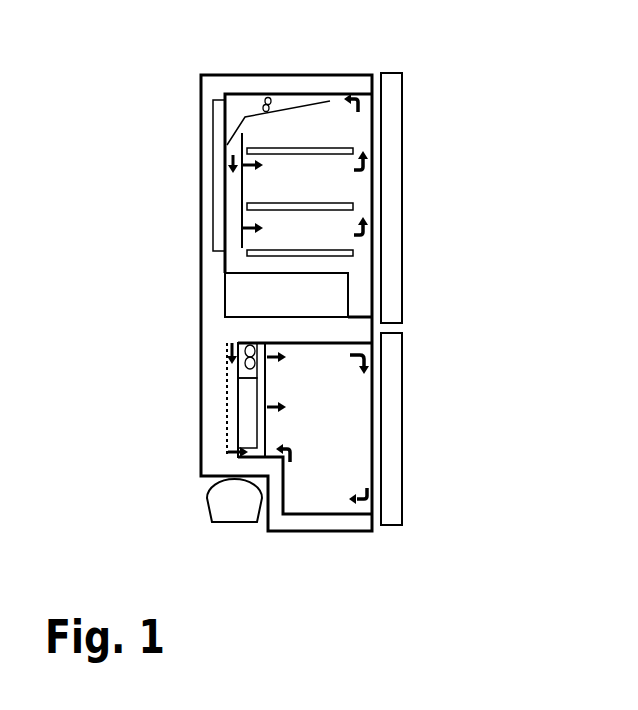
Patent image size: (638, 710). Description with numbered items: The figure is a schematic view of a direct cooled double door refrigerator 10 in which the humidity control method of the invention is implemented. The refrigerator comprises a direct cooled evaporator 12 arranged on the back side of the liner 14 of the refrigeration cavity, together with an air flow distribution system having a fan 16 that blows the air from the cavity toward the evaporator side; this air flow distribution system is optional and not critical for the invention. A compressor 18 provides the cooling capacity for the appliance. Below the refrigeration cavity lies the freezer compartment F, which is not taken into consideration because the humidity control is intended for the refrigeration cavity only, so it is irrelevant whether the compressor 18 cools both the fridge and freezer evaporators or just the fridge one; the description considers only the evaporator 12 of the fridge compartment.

The direct cooled double door refrigerator 10 is at (443, 245).
The direct cooled evaporator 12 is at (215, 202).
The liner 14 is at (225, 258).
The fan 16 is at (269, 98).
The compressor 18 is at (243, 522).
The freezer compartment F is at (350, 433).